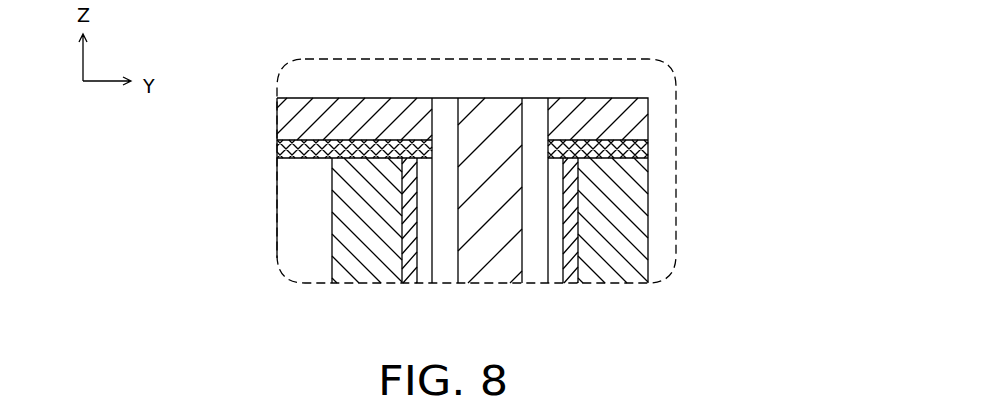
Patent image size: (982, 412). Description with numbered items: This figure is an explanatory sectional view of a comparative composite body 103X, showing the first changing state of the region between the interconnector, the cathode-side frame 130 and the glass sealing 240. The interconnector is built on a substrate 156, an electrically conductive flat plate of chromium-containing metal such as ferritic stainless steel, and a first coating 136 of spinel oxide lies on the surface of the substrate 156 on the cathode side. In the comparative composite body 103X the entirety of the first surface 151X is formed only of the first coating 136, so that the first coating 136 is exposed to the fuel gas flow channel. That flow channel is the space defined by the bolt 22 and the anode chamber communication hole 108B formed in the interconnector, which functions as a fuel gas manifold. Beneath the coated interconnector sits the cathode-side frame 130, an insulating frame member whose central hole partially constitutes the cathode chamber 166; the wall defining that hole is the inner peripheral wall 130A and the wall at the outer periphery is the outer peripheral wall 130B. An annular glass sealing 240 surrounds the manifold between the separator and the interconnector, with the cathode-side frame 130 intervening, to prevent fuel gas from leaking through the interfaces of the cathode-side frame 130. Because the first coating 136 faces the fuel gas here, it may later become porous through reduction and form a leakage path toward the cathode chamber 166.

The comparative composite body 103X is at (660, 83).
The substrate 156 is at (283, 127).
The first coating 136 is at (278, 150).
The first surface 151X is at (315, 159).
The cathode chamber 166 is at (325, 251).
The bolt 22 is at (488, 98).
The anode chamber communication hole 108B is at (535, 98).
The cathode-side frame 130 is at (471, 251).
The inner peripheral wall 130A is at (333, 281).
The outer peripheral wall 130B is at (648, 279).
The glass sealing 240 is at (405, 268).